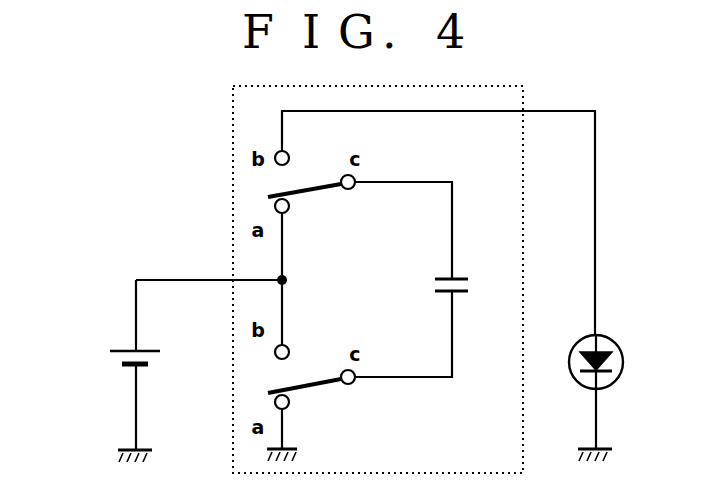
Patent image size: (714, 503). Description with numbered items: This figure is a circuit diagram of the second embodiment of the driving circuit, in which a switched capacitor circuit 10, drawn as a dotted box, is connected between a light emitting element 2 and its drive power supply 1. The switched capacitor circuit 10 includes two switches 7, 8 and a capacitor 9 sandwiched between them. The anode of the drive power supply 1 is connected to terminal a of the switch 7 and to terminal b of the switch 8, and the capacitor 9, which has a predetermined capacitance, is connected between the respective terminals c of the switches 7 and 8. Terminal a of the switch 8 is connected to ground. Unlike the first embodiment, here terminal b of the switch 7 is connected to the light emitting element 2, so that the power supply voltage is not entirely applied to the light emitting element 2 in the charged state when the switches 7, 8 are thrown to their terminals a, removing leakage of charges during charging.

The drive power supply 1 is at (115, 362).
The light emitting element 2 is at (623, 372).
The switch 7 is at (318, 165).
The switch 8 is at (314, 358).
The capacitor 9 is at (470, 287).
The switched capacitor circuit 10 is at (233, 160).